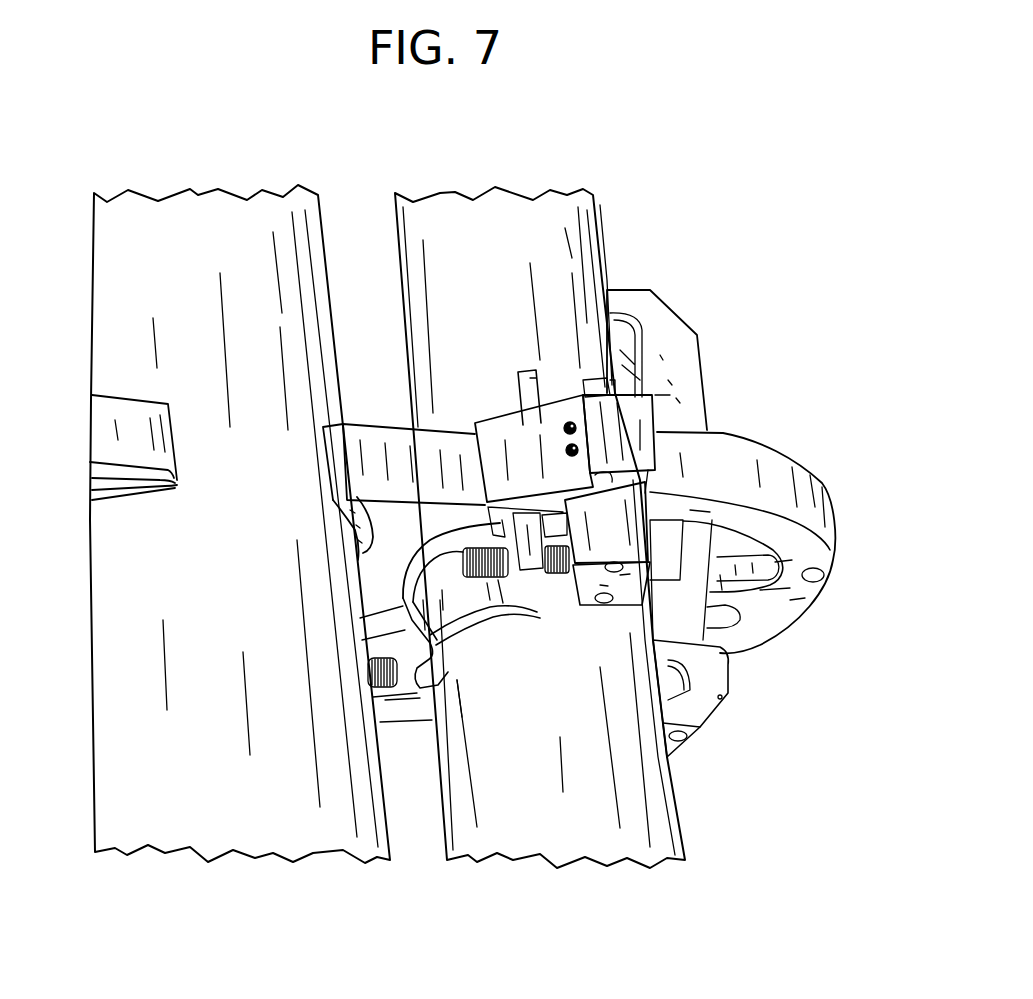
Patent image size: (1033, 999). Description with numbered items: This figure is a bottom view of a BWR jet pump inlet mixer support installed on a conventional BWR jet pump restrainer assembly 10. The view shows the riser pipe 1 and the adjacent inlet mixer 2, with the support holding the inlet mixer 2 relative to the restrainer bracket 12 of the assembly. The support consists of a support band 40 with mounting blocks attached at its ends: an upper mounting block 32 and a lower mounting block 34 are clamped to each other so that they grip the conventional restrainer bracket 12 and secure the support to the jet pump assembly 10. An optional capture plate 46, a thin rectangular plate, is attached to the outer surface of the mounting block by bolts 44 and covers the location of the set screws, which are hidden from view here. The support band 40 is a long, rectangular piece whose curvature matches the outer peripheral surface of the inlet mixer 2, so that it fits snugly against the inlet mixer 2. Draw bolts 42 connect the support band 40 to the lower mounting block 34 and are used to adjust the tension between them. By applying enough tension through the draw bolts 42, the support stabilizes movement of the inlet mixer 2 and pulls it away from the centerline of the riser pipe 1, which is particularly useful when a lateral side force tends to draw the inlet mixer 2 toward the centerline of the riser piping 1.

The riser pipe 1 is at (199, 196).
The inlet mixer 2 is at (488, 193).
The BWR jet pump restrainer assembly 10 is at (806, 231).
The restrainer bracket 12 is at (830, 487).
The upper mounting block 32 is at (640, 413).
The lower mounting block 34 is at (572, 600).
The support band 40 is at (430, 616).
The draw bolts 42 is at (405, 667).
The bolts 44 is at (580, 447).
The capture plate 46 is at (527, 427).